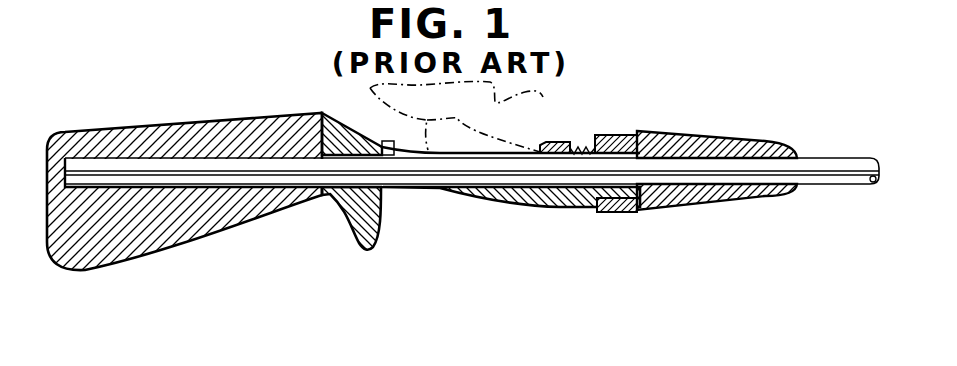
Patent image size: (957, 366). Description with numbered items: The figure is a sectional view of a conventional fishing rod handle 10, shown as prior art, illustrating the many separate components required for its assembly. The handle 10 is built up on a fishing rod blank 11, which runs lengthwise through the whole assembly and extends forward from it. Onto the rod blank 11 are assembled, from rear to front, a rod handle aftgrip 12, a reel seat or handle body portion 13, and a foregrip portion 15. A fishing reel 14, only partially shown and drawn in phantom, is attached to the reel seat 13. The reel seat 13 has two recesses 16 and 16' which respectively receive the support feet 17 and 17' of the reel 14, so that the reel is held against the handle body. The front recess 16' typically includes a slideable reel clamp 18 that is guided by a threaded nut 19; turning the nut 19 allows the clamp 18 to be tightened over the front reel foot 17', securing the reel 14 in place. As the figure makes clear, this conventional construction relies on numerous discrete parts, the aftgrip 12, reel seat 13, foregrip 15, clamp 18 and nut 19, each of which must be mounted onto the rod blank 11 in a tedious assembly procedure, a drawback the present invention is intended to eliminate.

The fishing rod handle 10 is at (463, 157).
The fishing rod blank 11 is at (826, 163).
The rod handle aftgrip 12 is at (212, 126).
The reel seat 13 is at (515, 205).
The fishing reel 14 is at (528, 92).
The foregrip portion 15 is at (706, 131).
The recess 16 is at (381, 181).
The support foot 17 is at (350, 107).
The recess 16' is at (567, 130).
The support foot 17' is at (520, 127).
The slideable reel clamp 18 is at (612, 135).
The threaded nut 19 is at (614, 213).